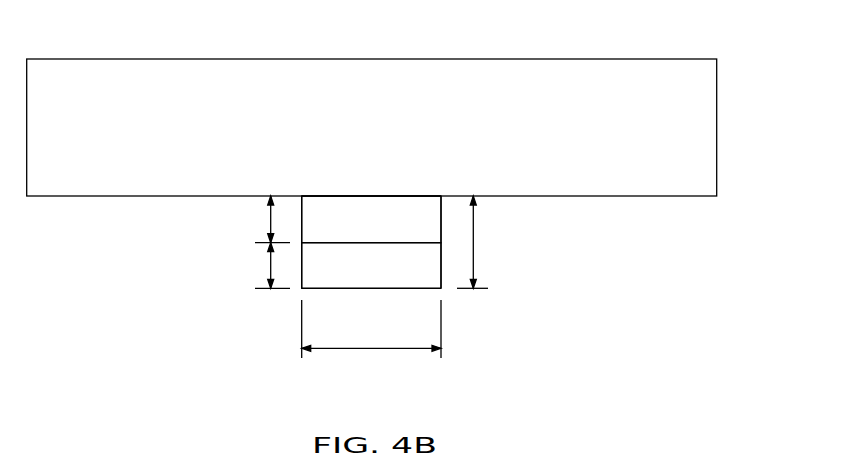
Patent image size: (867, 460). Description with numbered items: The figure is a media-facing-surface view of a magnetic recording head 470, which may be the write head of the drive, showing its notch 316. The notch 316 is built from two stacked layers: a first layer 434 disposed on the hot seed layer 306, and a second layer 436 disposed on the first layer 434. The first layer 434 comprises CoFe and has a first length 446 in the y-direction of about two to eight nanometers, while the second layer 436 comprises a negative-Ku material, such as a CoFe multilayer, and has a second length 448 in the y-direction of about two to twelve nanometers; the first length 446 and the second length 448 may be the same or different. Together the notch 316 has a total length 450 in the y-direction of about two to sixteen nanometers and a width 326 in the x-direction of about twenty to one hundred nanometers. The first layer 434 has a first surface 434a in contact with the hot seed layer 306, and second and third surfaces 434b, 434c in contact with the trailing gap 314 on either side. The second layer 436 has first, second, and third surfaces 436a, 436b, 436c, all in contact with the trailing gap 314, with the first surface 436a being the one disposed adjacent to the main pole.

The magnetic recording head 470 is at (664, 26).
The hot seed layer 306 is at (123, 131).
The trailing gap 314 is at (123, 240).
The notch 316 is at (352, 180).
The first layer 434 is at (386, 230).
The first surface of first layer 434a is at (384, 196).
The second surface of first layer 434b is at (302, 220).
The third surface of first layer 434c is at (441, 220).
The second layer 436 is at (386, 275).
The first surface of second layer 436a is at (370, 288).
The second surface of second layer 436b is at (302, 262).
The third surface of second layer 436c is at (441, 262).
The first length 446 is at (271, 218).
The second length 448 is at (271, 265).
The total length 450 is at (473, 240).
The width 326 is at (370, 350).